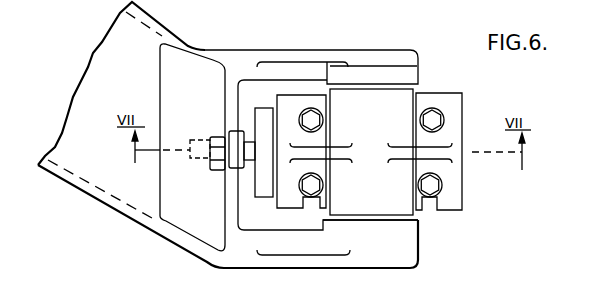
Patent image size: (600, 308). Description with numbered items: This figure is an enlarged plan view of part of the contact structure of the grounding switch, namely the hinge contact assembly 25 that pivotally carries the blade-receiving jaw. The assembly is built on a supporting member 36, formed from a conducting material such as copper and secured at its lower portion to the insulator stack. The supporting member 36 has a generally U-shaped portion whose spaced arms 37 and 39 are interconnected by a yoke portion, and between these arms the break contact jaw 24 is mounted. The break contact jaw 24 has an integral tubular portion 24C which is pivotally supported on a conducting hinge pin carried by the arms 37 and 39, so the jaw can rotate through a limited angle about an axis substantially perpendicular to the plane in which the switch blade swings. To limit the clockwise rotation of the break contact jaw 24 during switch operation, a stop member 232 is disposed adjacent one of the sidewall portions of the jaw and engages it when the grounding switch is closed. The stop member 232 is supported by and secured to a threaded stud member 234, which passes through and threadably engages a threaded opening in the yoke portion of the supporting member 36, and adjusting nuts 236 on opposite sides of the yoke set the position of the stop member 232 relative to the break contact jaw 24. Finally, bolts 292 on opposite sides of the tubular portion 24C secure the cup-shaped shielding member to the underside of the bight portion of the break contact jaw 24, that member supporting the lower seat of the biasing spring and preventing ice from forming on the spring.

The break contact jaw 24 is at (462, 198).
The tubular portion 24C is at (415, 95).
The hinge contact assembly 25 is at (333, 38).
The supporting member 36 is at (248, 56).
The arm 37 is at (387, 58).
The arm 39 is at (401, 262).
The stop member 232 is at (265, 197).
The threaded stud member 234 is at (203, 158).
The adjusting nuts 236 is at (238, 136).
The bolts 292 is at (438, 118).